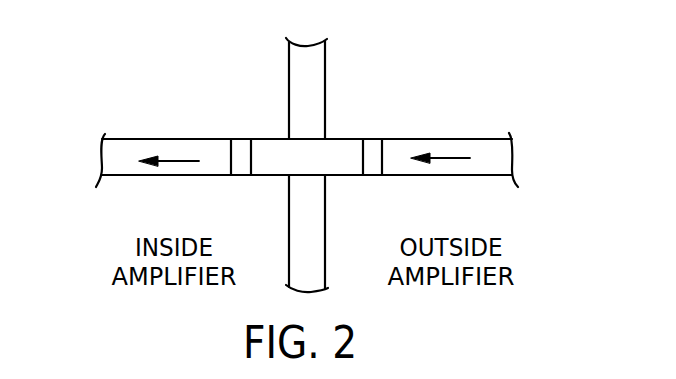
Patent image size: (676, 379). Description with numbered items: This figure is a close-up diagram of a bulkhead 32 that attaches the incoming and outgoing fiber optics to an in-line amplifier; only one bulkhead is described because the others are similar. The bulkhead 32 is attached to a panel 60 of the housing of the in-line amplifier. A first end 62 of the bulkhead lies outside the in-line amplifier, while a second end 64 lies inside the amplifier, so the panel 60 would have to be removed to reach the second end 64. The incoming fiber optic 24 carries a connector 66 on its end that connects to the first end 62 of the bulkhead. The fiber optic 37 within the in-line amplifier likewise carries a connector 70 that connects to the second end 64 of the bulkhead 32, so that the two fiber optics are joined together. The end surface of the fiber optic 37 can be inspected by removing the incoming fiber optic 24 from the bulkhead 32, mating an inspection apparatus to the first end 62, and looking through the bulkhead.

The incoming fiber optic 24 is at (441, 144).
The fiber optic within the in-line amplifier 37 is at (186, 149).
The bulkhead 32 is at (341, 128).
The panel 60 is at (289, 103).
The first end of the bulkhead 62 is at (339, 166).
The second end of the bulkhead 64 is at (277, 164).
The connector 66 is at (373, 142).
The connector 70 is at (236, 167).